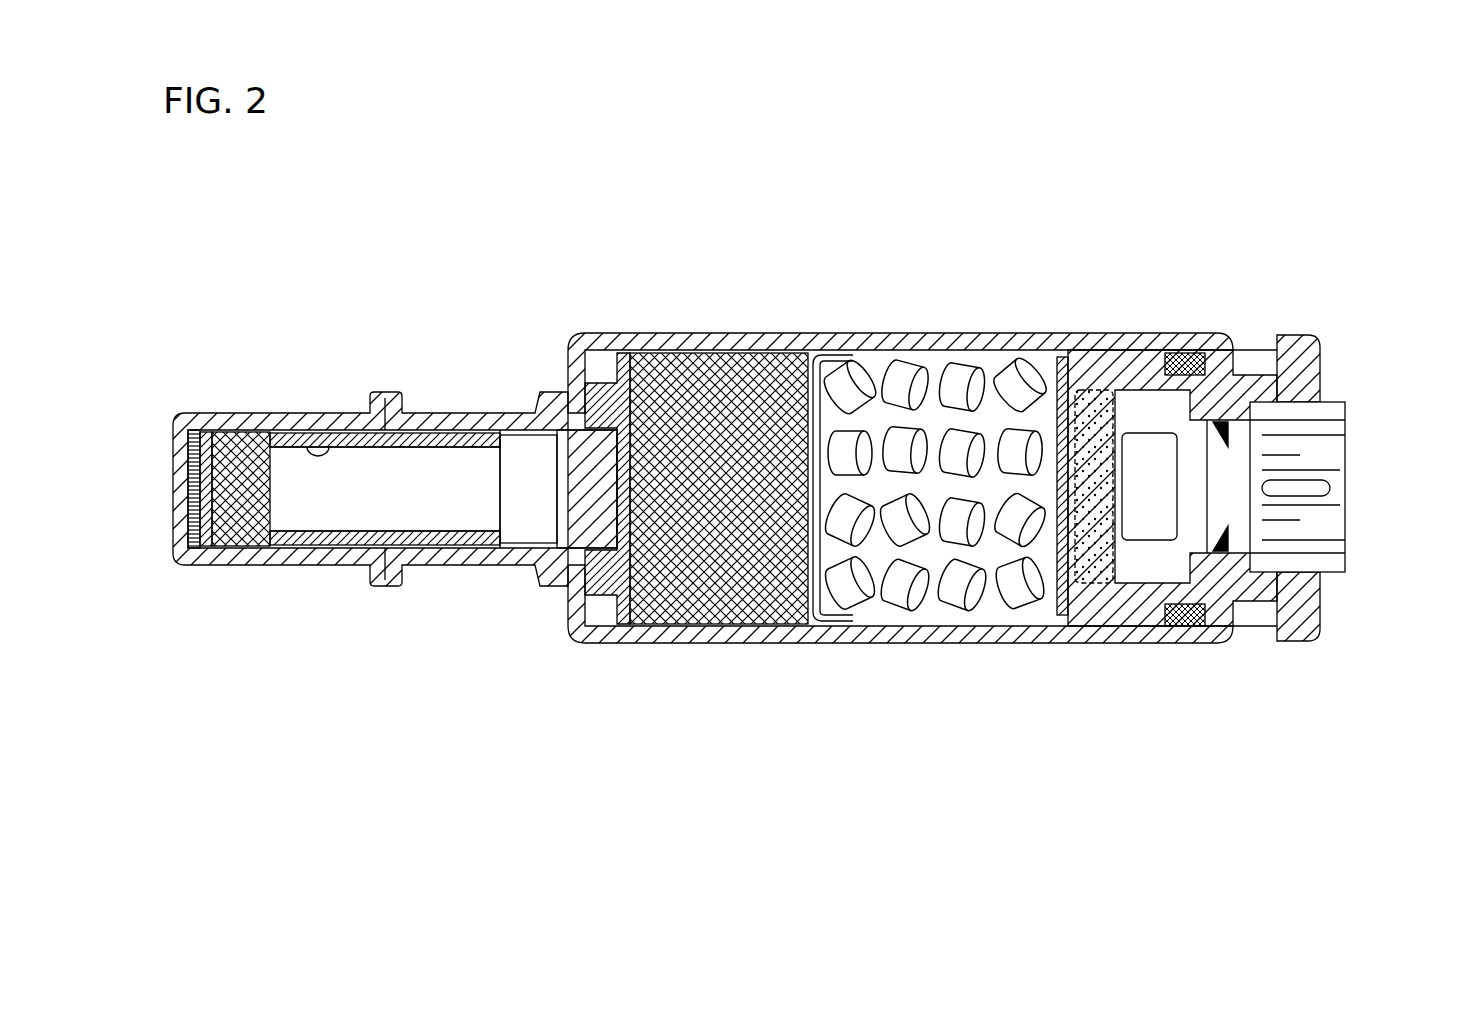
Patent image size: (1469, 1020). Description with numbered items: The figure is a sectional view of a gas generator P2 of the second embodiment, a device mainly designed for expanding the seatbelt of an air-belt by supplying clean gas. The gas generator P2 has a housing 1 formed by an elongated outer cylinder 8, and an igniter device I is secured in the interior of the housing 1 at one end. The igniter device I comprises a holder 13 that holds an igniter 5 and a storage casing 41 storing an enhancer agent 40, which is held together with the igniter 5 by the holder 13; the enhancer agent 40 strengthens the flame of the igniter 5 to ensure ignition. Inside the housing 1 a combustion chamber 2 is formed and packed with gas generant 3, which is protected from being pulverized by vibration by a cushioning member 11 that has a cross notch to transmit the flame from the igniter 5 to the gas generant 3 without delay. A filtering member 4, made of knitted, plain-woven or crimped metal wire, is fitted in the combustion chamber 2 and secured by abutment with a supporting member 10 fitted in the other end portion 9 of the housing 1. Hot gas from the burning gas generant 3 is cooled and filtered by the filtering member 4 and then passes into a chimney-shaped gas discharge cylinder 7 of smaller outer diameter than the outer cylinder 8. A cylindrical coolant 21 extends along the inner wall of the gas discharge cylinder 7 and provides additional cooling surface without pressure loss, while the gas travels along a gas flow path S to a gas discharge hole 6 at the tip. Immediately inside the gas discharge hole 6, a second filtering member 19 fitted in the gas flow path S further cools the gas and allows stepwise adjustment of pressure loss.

The gas generator P2 is at (1104, 208).
The housing 1 is at (1237, 319).
The combustion chamber 2 is at (943, 608).
The gas generant 3 is at (908, 606).
The filtering member 4 is at (775, 352).
The igniter 5 is at (1317, 592).
The gas discharge hole 6 is at (176, 480).
The gas discharge cylinder 7 is at (454, 420).
The outer cylinder 8 is at (982, 340).
The other end portion 9 is at (578, 348).
The supporting member 10 is at (624, 352).
The cushioning member 11 is at (1063, 357).
The holder 13 is at (1303, 335).
The second filtering member 19 is at (252, 440).
The coolant 21 is at (306, 443).
The gas flow path S is at (408, 455).
The enhancer agent 40 is at (1115, 425).
The storage casing 41 is at (1090, 385).
The igniter device I is at (1369, 399).